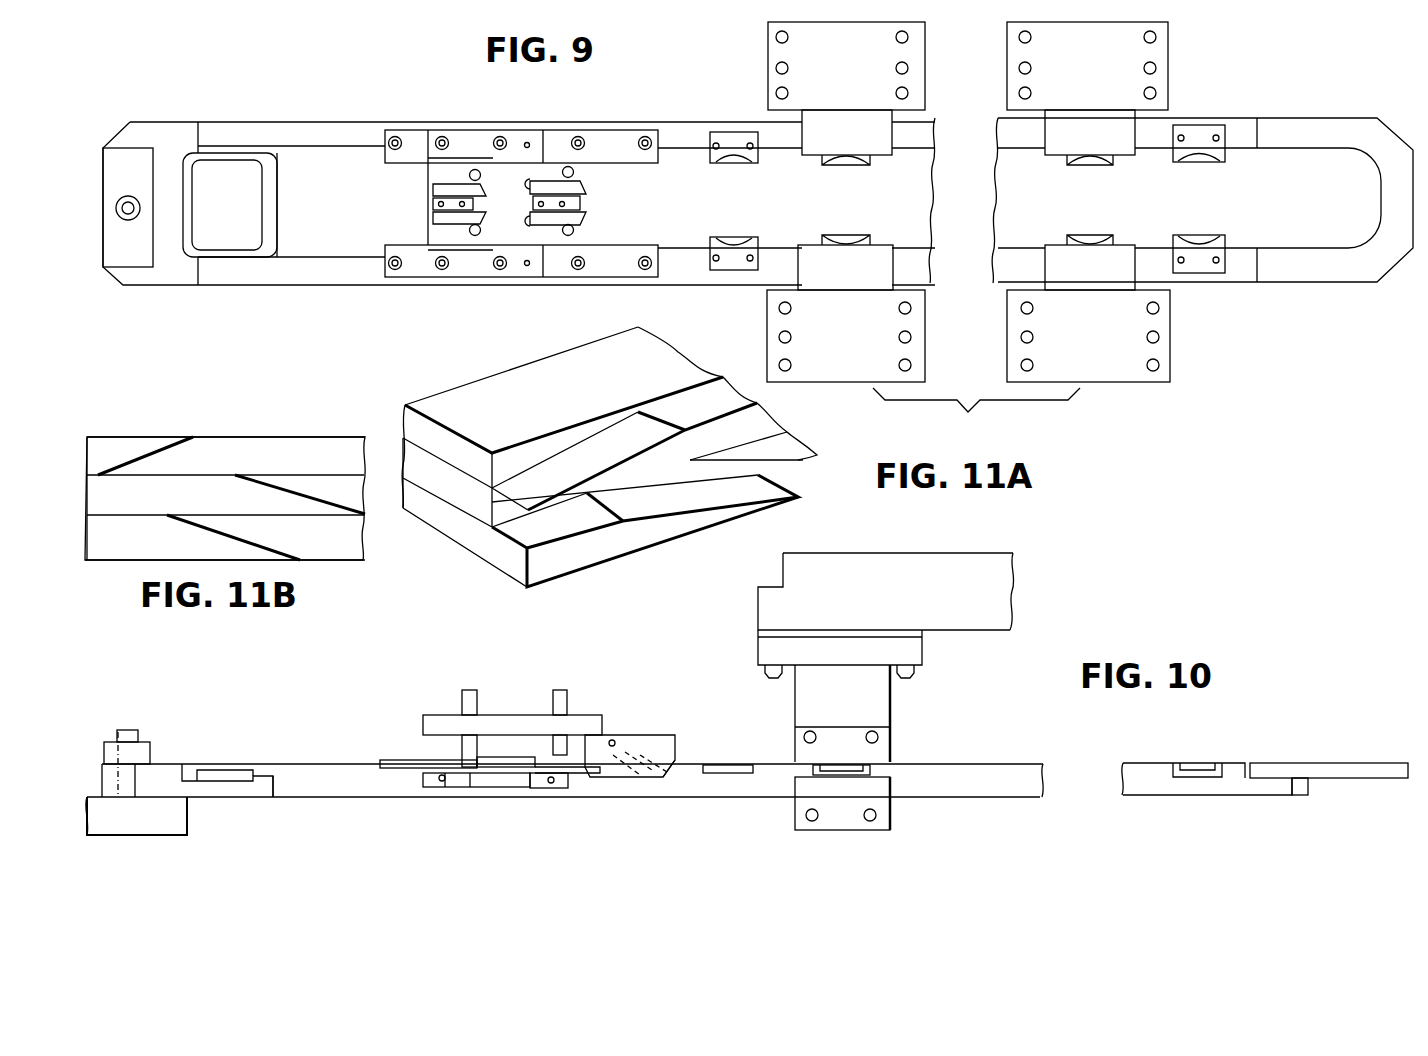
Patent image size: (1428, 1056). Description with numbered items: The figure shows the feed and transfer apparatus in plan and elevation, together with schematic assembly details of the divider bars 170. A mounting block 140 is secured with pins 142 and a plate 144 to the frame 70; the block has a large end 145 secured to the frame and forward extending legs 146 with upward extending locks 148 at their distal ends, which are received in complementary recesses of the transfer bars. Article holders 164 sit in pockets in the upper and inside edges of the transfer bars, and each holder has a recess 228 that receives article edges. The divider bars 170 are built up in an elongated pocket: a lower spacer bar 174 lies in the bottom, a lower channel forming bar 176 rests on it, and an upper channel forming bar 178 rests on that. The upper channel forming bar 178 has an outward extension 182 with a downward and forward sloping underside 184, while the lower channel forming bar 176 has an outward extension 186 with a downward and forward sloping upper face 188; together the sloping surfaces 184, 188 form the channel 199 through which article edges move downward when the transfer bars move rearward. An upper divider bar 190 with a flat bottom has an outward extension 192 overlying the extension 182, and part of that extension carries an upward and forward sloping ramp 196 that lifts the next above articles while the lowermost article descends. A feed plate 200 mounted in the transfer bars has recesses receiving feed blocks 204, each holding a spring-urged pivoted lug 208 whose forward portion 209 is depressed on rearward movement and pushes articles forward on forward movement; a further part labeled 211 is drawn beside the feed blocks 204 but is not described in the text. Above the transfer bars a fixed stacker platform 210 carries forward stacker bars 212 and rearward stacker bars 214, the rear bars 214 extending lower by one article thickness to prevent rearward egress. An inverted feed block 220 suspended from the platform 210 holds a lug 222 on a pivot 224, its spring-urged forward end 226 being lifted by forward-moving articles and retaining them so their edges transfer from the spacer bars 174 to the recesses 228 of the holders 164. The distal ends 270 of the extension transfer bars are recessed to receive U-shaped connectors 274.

In FIG. 9, the mounting block 140 is at (175, 142).
In FIG. 10, the mounting block 140 is at (689, 780).
In FIG. 9, the plate 144 is at (135, 162).
In FIG. 10, the plate 144 is at (110, 748).
In FIG. 9, the ramp 196 is at (445, 163).
In FIG. 11B, the ramp 196 is at (153, 450).
In FIG. 11A, the ramp 196 is at (565, 465).
In FIG. 9, the lower spacer bar 174 is at (648, 252).
In FIG. 9, the feed block 204 is at (433, 203).
In FIG. 9, the feed plate 200 is at (447, 236).
In FIG. 9, the pin 211 is at (499, 183).
In FIG. 9, the rearward vertical stacker bar 214 is at (499, 215).
In FIG. 10, the rearward vertical stacker bar 214 is at (475, 710).
In FIG. 9, the pivoted lug 208 is at (582, 207).
In FIG. 10, the pivoted lug 208 is at (592, 770).
In FIG. 9, the forward portion of lug 209 is at (585, 223).
In FIG. 10, the forward portion of lug 209 is at (593, 767).
In FIG. 9, the forward vertical stacker bar 212 is at (575, 172).
In FIG. 10, the forward vertical stacker bar 212 is at (565, 710).
In FIG. 9, the recess 228 is at (735, 250).
In FIG. 9, the article holder 164 is at (748, 270).
In FIG. 11B, the divider bar 170 is at (197, 412).
In FIG. 11A, the divider bar 170 is at (540, 349).
In FIG. 11B, the upper divider bar 190 is at (108, 452).
In FIG. 11A, the upper divider bar 190 is at (405, 432).
In FIG. 11B, the outward extension 192 is at (238, 452).
In FIG. 11A, the outward extension 192 is at (685, 450).
In FIG. 11B, the outward extension 182 is at (305, 490).
In FIG. 11A, the outward extension 182 is at (790, 452).
In FIG. 11B, the sloping underside 184 is at (310, 492).
In FIG. 11A, the sloping underside 184 is at (790, 463).
In FIG. 10, the sloping underside 184 is at (500, 755).
In FIG. 11B, the upper channel forming bar 178 is at (107, 493).
In FIG. 11A, the upper channel forming bar 178 is at (478, 512).
In FIG. 11B, the outward extension 186 is at (165, 545).
In FIG. 11A, the outward extension 186 is at (623, 545).
In FIG. 11B, the sloping upper face 188 is at (245, 545).
In FIG. 11A, the sloping upper face 188 is at (757, 485).
In FIG. 10, the sloping upper face 188 is at (402, 758).
In FIG. 11B, the lower channel forming bar 176 is at (357, 545).
In FIG. 11A, the lower channel forming bar 176 is at (502, 560).
In FIG. 10, the large end 145 is at (168, 765).
In FIG. 10, the lock 148 is at (258, 780).
In FIG. 10, the pin 142 is at (137, 787).
In FIG. 10, the leg 146 is at (275, 798).
In FIG. 10, the frame 70 is at (170, 838).
In FIG. 10, the channel 199 is at (410, 776).
In FIG. 10, the stacker platform 210 is at (588, 728).
In FIG. 10, the pivot 224 is at (618, 743).
In FIG. 10, the inverted feed block 220 is at (665, 745).
In FIG. 10, the lug 222 is at (640, 757).
In FIG. 10, the forward end of lug 226 is at (665, 778).
In FIG. 10, the U-shaped connector 274 is at (1378, 773).
In FIG. 10, the distal end 270 is at (1310, 790).